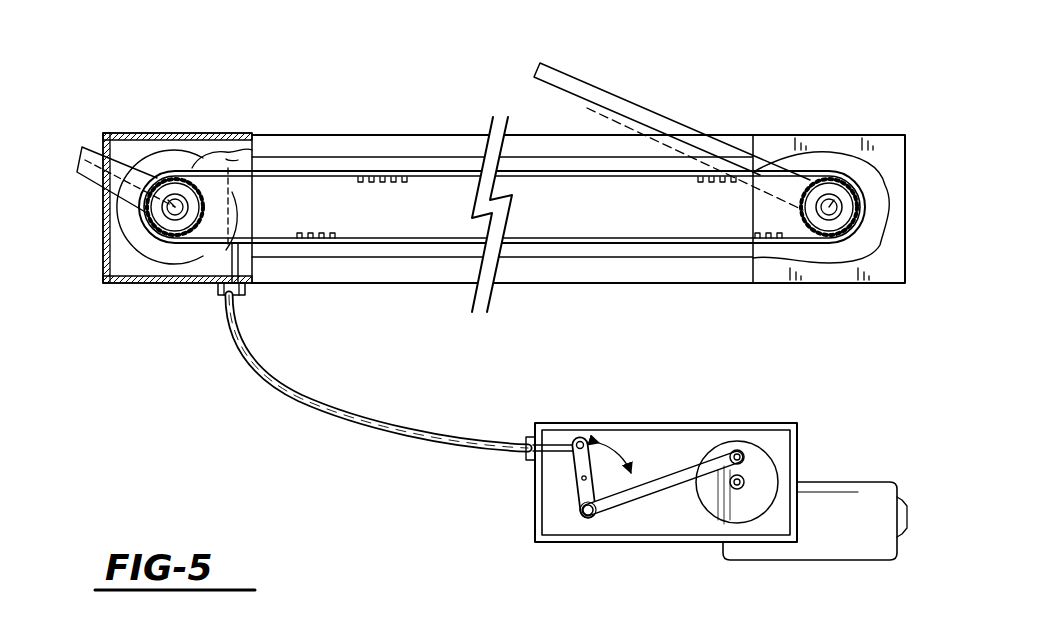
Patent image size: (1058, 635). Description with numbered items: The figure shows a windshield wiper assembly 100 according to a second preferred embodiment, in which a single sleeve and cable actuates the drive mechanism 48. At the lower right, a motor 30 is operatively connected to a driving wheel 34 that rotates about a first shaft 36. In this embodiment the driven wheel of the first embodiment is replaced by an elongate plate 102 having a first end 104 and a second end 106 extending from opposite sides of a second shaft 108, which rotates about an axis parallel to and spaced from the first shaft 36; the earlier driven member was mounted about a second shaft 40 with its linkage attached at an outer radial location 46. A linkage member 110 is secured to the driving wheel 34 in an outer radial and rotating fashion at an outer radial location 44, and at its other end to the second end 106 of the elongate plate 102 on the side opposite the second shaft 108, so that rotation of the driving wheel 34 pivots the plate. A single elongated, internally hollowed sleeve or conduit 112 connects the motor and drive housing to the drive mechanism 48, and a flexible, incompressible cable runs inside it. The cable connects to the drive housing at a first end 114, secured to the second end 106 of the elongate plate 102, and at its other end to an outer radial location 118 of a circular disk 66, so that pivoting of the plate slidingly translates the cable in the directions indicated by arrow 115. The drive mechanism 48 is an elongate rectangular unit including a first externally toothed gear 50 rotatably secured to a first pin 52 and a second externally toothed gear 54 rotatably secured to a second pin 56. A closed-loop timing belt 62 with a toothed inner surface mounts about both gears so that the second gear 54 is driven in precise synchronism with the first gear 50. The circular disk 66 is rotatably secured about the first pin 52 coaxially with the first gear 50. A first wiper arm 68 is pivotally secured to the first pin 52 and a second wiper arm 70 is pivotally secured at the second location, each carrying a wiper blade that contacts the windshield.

The motor 30 is at (833, 536).
The driving wheel 34 is at (760, 480).
The first shaft 36 is at (735, 490).
The second shaft 40 is at (590, 518).
The outer radial location of the driving wheel 44 is at (740, 450).
The outer radial location of the driven member 46 is at (225, 270).
The drive mechanism 48 is at (325, 116).
The first externally toothed gear 50 is at (210, 197).
The first pin 52 is at (172, 198).
The second externally toothed gear 54 is at (810, 237).
The second pin 56 is at (828, 204).
The timing belt 62 is at (452, 172).
The circular disk 66 is at (142, 242).
The first wiper arm 68 is at (100, 150).
The second wiper arm 70 is at (625, 103).
The windshield wiper assembly 100 is at (228, 386).
The elongate plate 102 is at (568, 470).
The first end of the elongate plate 104 is at (545, 520).
The second end of the elongate plate 106 is at (589, 440).
The second shaft 108 is at (582, 481).
The linkage member 110 is at (680, 466).
The sleeve or conduit 112 is at (383, 423).
The first end of the cable 114 is at (560, 440).
The arrow 115 is at (620, 455).
The outer radial location of the disk 118 is at (190, 158).